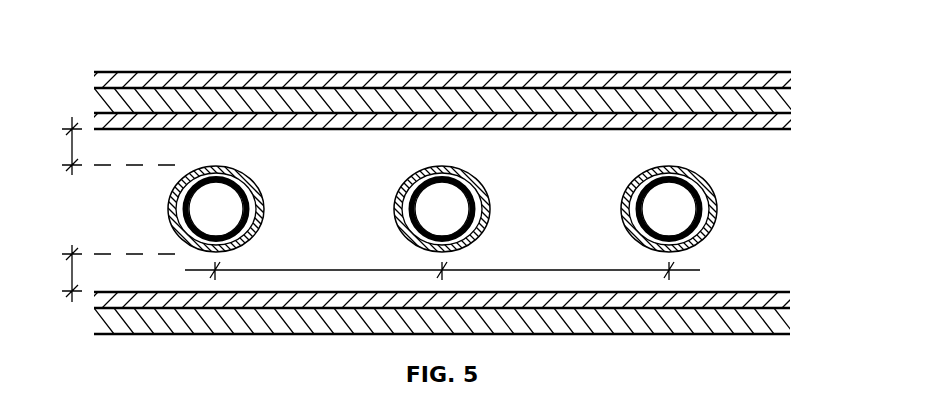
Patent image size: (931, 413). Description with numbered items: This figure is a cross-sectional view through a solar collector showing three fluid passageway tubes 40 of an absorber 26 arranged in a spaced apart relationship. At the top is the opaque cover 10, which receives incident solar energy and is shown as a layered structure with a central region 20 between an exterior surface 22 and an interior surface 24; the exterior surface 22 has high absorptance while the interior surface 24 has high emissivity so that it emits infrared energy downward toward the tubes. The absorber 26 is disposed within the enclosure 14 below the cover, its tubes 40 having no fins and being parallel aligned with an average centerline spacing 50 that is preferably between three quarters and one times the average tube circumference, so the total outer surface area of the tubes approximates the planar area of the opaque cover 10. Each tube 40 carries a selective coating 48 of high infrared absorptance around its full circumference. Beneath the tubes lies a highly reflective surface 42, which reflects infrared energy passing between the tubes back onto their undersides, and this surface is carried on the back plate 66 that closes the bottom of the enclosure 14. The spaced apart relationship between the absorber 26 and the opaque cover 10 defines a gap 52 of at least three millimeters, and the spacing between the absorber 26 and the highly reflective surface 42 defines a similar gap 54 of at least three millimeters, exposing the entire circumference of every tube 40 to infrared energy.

The opaque cover 10 is at (439, 101).
The enclosure 14 is at (362, 164).
The central region 20 is at (94, 100).
The exterior surface 22 is at (125, 72).
The interior surface 24 is at (289, 130).
The absorber 26 is at (436, 212).
The fluid passageway tube 40 is at (442, 209).
The highly reflective surface 42 is at (732, 290).
The coating 48 is at (397, 213).
The average centerline spacing 50 is at (328, 270).
The gap 52 is at (72, 152).
The gap 54 is at (72, 271).
The back plate 66 is at (790, 320).